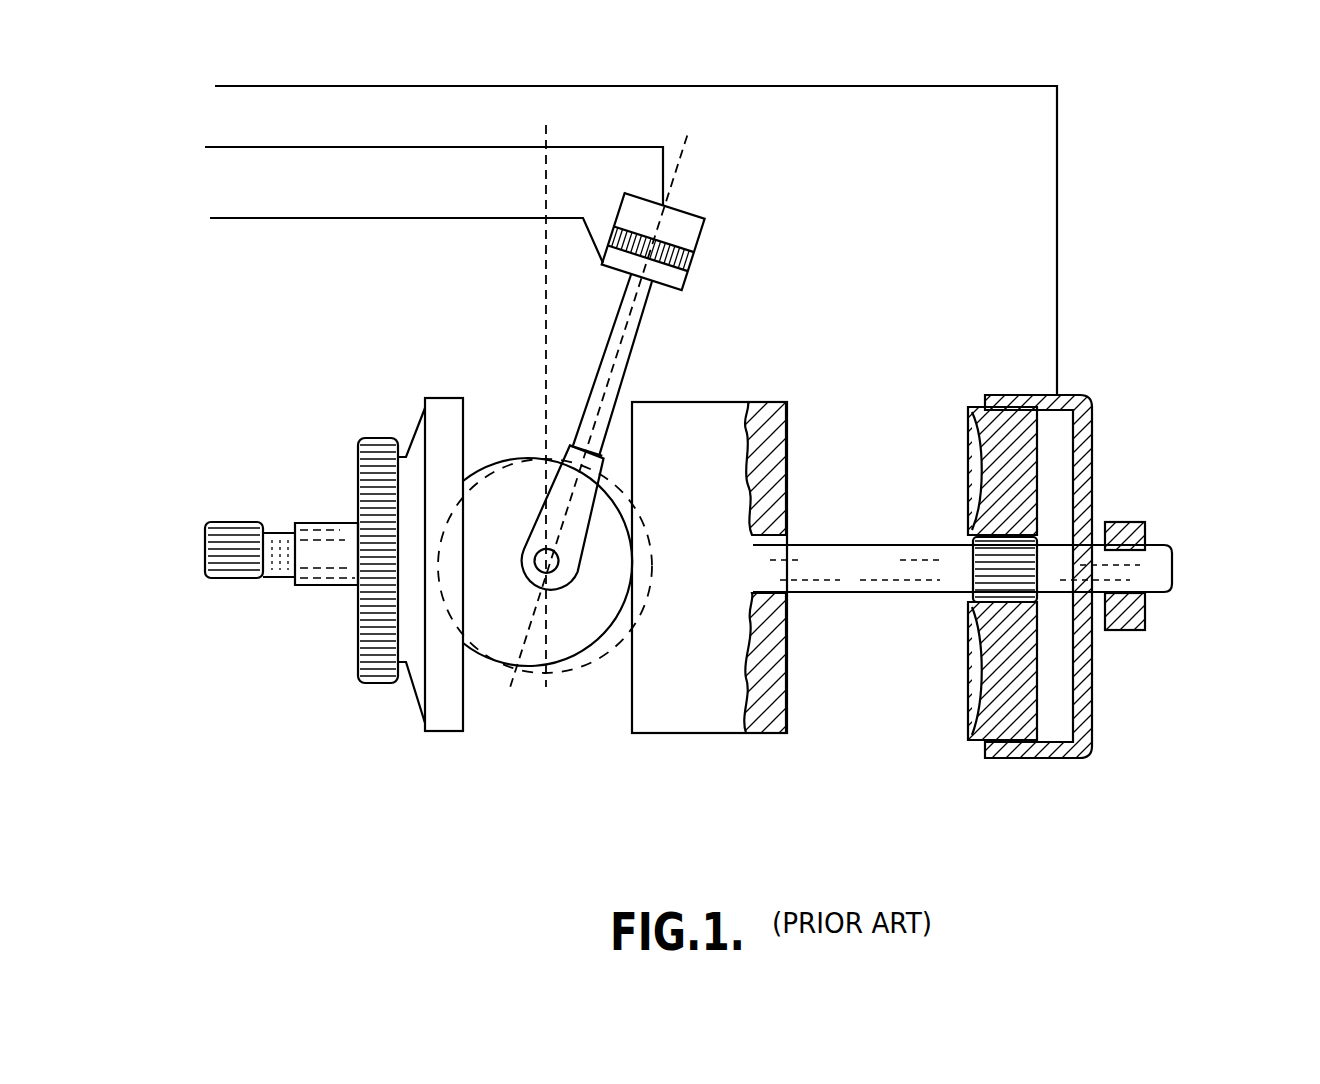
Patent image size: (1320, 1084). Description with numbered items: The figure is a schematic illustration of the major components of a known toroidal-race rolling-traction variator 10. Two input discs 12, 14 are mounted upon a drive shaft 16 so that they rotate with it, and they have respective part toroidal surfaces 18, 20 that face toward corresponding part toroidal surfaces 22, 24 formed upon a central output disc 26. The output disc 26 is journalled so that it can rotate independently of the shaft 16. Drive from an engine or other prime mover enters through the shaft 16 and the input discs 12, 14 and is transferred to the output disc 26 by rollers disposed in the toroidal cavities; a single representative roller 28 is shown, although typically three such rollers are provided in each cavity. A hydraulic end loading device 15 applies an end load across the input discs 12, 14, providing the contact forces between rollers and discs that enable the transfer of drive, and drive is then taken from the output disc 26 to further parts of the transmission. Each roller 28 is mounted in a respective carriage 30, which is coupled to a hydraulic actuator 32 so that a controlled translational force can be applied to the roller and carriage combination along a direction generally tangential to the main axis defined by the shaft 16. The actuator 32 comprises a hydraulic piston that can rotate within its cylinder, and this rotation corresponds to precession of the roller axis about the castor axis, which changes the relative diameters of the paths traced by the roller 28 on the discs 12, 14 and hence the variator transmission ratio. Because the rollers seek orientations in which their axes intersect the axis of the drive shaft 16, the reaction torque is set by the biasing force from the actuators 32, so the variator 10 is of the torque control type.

The toroidal-race rolling-traction variator 10 is at (520, 757).
The input disc 12 is at (399, 547).
The input disc 14 is at (990, 744).
The hydraulic end loading device 15 is at (1096, 742).
The drive shaft 16 is at (327, 588).
The part toroidal surface 18 is at (547, 517).
The part toroidal surface 20 is at (978, 468).
The part toroidal surface 22 is at (665, 691).
The part toroidal surface 24 is at (776, 668).
The central output disc 26 is at (710, 438).
The roller 28 is at (532, 670).
The carriage 30 is at (560, 450).
The hydraulic actuator 32 is at (702, 208).